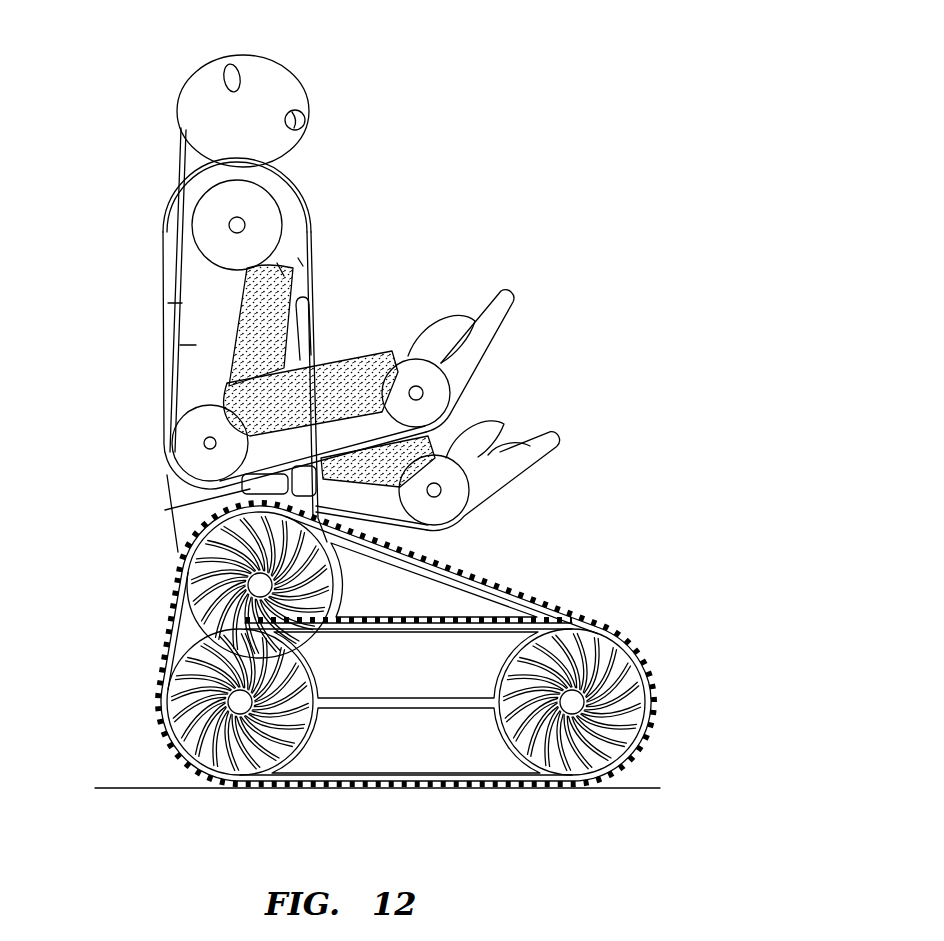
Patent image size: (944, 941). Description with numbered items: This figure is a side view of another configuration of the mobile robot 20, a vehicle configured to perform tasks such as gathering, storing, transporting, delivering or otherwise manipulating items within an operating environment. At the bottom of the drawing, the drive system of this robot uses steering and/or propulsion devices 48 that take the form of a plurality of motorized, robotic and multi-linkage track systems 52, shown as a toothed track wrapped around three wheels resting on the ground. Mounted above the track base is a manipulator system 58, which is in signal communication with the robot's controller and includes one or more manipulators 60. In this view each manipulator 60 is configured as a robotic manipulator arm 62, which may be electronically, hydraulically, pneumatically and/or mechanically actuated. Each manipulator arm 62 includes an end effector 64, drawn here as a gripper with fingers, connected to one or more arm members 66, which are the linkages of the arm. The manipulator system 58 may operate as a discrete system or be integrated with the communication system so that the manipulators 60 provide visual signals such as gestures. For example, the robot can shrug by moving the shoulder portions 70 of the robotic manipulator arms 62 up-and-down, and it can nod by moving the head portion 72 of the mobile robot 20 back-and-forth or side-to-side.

The mobile robot 20 is at (505, 78).
The steering and/or propulsion device 48 is at (146, 714).
The motorized track system 52 is at (504, 588).
The manipulator system 58 is at (496, 253).
The manipulator 60 is at (360, 330).
The robotic manipulator arm 62 is at (432, 383).
The end effector 64 is at (521, 307).
The arm member 66 is at (193, 345).
The shoulder portion 70 is at (192, 176).
The head portion 72 is at (277, 55).